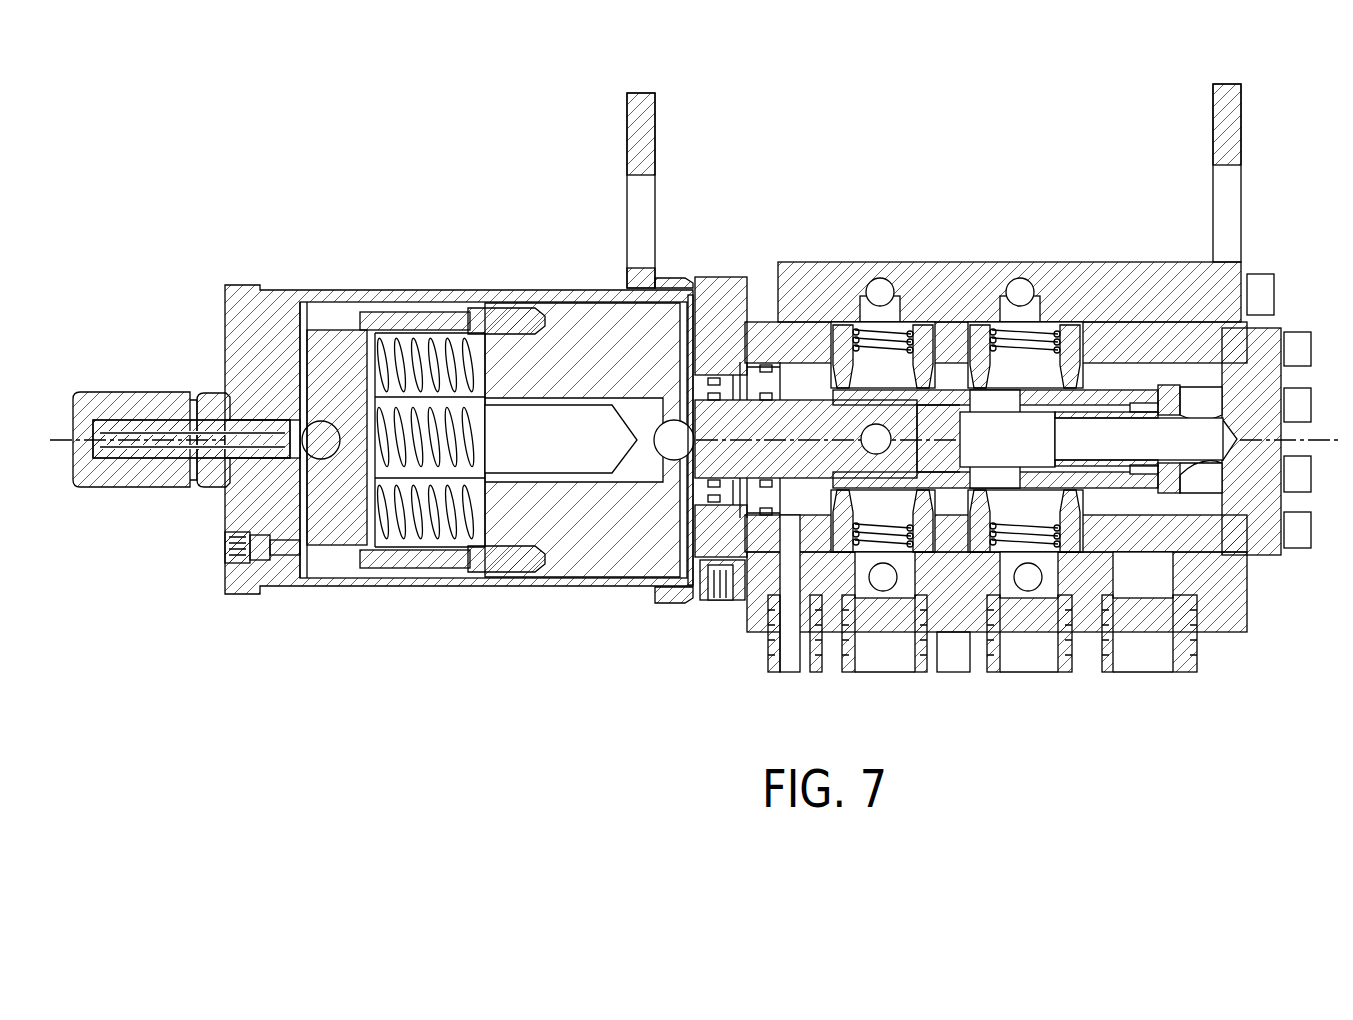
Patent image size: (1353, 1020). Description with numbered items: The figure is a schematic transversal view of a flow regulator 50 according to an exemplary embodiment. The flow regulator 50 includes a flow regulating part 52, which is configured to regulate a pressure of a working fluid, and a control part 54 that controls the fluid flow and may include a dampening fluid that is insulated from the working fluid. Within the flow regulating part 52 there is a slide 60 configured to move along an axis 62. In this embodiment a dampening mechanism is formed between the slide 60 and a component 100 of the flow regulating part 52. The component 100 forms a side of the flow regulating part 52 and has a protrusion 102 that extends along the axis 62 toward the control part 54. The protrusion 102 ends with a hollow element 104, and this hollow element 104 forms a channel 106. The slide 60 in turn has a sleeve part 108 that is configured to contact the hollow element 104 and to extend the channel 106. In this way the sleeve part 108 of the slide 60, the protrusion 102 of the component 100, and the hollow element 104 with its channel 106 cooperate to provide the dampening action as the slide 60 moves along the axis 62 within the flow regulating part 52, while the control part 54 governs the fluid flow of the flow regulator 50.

The flow regulator 50 is at (818, 118).
The flow regulating part 52 is at (1090, 250).
The control part 54 is at (397, 278).
The slide 60 is at (1036, 403).
The axis 62 is at (543, 437).
The component 100 is at (1256, 494).
The protrusion 102 is at (1168, 483).
The hollow element 104 is at (1112, 468).
The channel 106 is at (1085, 440).
The sleeve part 108 is at (1131, 390).